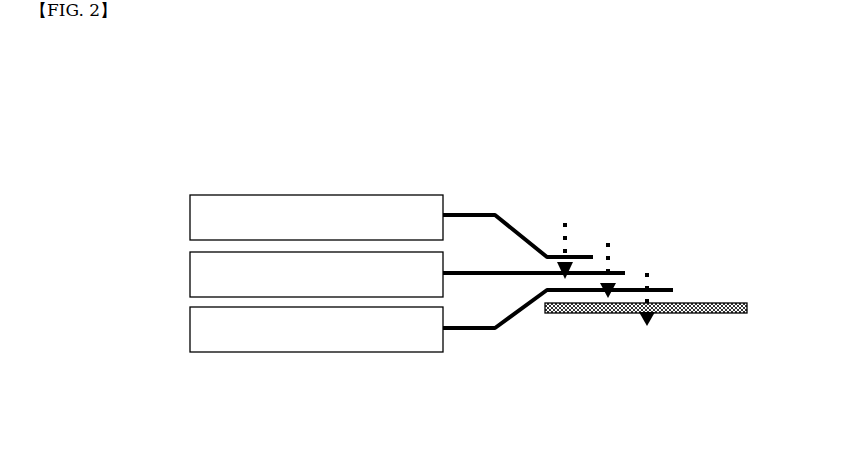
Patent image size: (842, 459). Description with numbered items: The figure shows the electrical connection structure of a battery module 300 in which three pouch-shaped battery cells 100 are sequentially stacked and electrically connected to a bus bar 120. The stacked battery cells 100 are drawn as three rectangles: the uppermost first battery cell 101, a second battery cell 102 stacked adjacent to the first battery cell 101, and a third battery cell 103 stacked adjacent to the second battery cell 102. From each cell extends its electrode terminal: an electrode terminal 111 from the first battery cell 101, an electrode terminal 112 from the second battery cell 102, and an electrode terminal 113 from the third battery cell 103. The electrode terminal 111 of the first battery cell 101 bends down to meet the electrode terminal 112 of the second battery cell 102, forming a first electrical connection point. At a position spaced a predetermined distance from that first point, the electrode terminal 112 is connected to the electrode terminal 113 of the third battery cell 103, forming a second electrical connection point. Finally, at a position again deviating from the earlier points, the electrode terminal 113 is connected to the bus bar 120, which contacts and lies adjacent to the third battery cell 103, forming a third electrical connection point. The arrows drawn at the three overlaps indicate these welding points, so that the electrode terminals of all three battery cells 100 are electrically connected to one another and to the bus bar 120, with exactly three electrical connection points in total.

The battery module 300 is at (57, 100).
The battery cells 100 is at (250, 277).
The first battery cell 101 is at (263, 208).
The second battery cell 102 is at (222, 260).
The third battery cell 103 is at (348, 340).
The electrode terminal 111 is at (510, 222).
The electrode terminal 112 is at (622, 272).
The electrode terminal 113 is at (525, 310).
The bus bar 120 is at (700, 323).